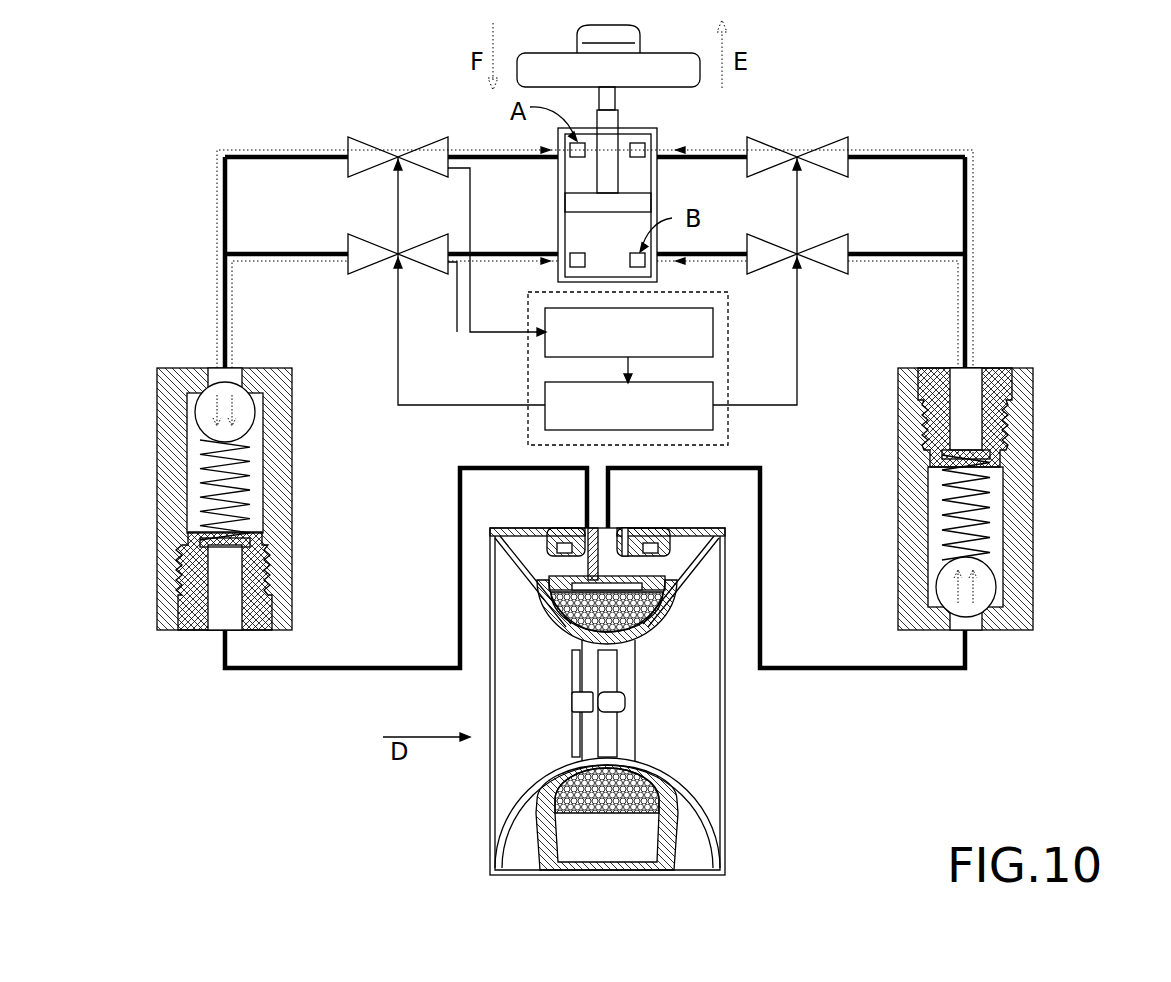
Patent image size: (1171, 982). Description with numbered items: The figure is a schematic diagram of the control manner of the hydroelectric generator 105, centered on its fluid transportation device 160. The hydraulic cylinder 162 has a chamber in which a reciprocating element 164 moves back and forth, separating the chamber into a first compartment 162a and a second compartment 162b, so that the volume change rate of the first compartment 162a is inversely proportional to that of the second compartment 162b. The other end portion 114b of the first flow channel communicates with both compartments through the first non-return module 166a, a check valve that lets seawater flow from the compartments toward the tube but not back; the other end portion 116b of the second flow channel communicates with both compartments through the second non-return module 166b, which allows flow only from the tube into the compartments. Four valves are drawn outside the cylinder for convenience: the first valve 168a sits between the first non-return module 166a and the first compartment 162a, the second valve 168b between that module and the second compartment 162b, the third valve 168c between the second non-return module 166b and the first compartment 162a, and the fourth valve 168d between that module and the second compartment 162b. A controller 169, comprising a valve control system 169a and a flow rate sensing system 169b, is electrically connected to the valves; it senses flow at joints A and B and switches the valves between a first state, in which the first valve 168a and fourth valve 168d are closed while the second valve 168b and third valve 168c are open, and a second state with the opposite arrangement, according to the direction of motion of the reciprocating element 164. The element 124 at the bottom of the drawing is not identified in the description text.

The hydroelectric generator 105 is at (1044, 170).
The fluid transportation device 160 is at (760, 118).
The hydraulic cylinder 162 is at (653, 182).
The first compartment 162a is at (632, 170).
The second compartment 162b is at (583, 238).
The reciprocating element 164 is at (572, 205).
The first valve 168a is at (373, 150).
The second valve 168b is at (360, 268).
The third valve 168c is at (837, 168).
The fourth valve 168d is at (833, 272).
The controller 169 is at (728, 422).
The valve control system 169a is at (713, 402).
The flow rate sensing system 169b is at (713, 332).
The first non-return module 166a is at (157, 485).
The second non-return module 166b is at (1033, 490).
The other end portion of the first flow channel 114b is at (585, 526).
The other end portion of the second flow channel 116b is at (610, 526).
The pump assembly 124 is at (607, 735).